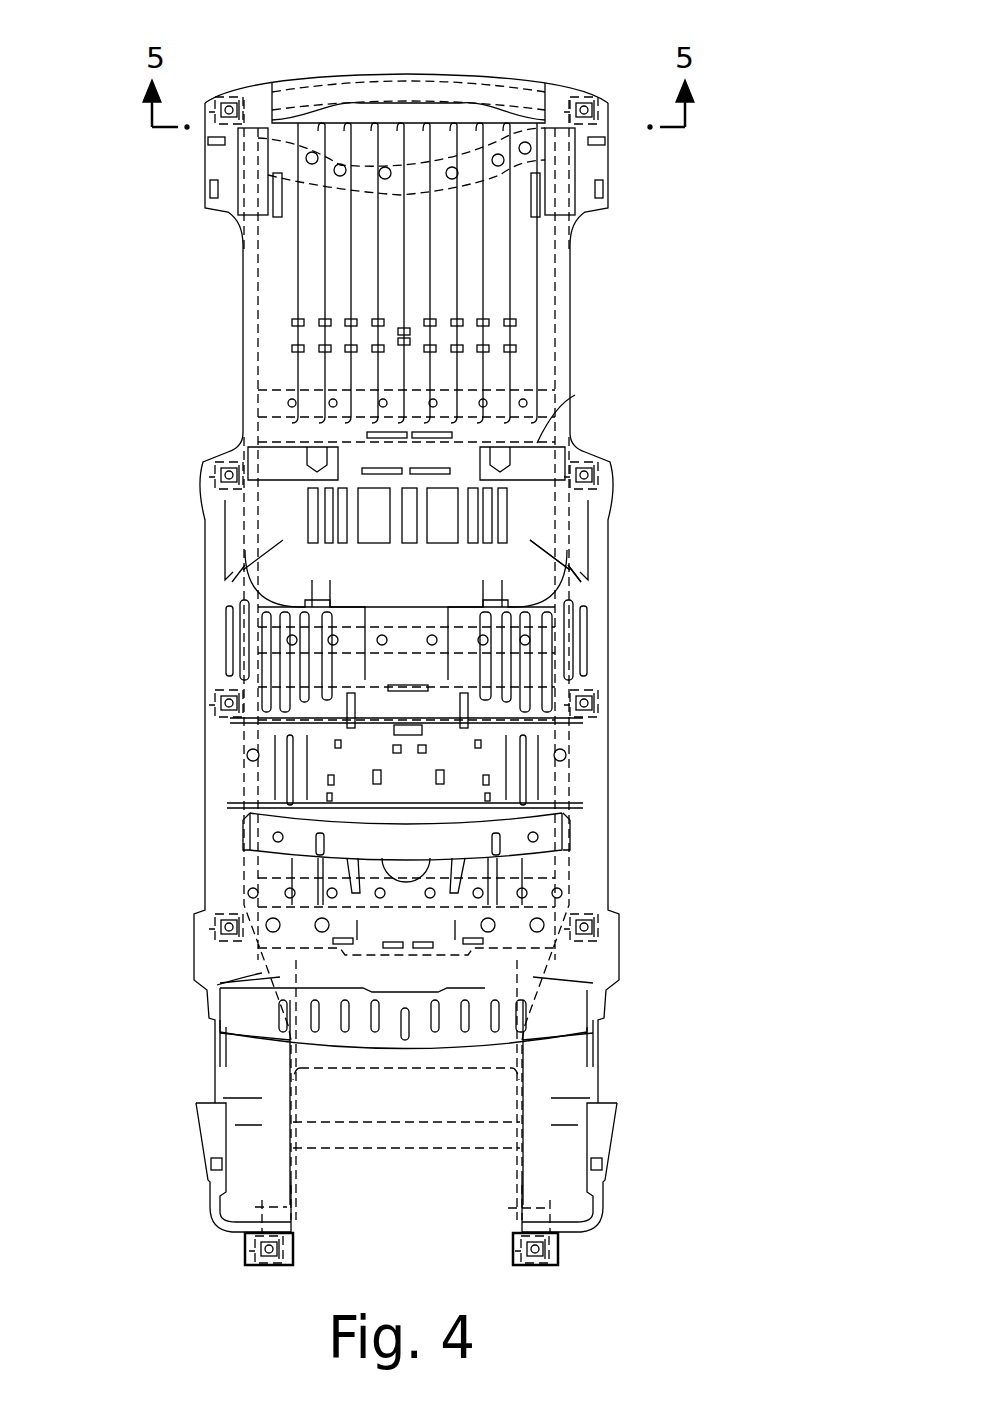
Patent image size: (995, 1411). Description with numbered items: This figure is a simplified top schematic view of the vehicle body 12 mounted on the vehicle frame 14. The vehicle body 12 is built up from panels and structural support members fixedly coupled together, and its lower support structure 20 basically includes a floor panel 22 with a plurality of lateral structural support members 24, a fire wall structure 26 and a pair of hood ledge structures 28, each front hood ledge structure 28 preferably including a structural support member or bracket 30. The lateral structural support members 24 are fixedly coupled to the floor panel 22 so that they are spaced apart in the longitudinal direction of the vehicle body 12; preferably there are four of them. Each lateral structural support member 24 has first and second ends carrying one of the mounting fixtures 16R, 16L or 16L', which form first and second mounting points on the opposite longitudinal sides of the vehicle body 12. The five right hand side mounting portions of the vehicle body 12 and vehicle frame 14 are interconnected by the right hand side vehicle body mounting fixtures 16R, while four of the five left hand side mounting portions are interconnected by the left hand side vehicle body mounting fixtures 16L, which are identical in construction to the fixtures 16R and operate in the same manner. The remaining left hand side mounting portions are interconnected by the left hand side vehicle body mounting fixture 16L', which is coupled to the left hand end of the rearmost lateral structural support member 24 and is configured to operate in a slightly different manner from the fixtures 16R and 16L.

The vehicle body 12 is at (140, 612).
The vehicle frame 14 is at (588, 322).
The right hand side vehicle body mounting fixtures 16R is at (223, 97).
The left hand side vehicle body mounting fixtures 16L is at (636, 858).
The left hand side vehicle body mounting fixture 16L' is at (572, 64).
The lower support structure 20 is at (645, 586).
The floor panel 22 is at (518, 282).
The lateral structural support members 24 is at (515, 85).
The fire wall structure 26 is at (485, 990).
The hood ledge structures 28 is at (228, 1080).
The structural support member or bracket 30 is at (287, 1209).